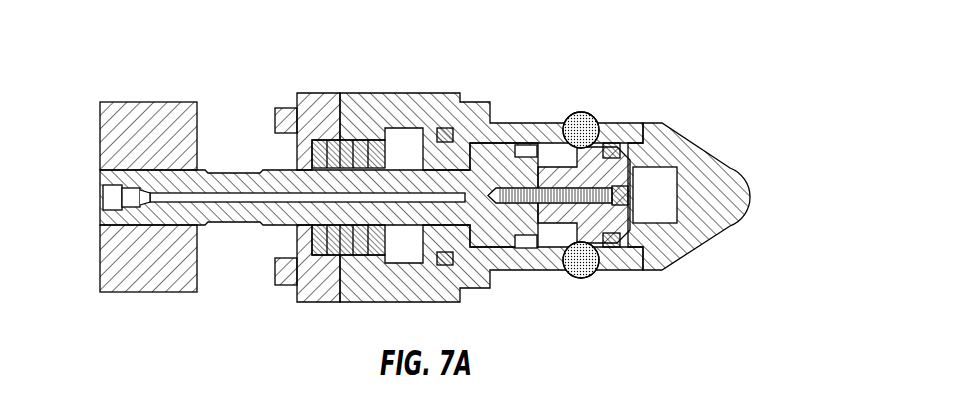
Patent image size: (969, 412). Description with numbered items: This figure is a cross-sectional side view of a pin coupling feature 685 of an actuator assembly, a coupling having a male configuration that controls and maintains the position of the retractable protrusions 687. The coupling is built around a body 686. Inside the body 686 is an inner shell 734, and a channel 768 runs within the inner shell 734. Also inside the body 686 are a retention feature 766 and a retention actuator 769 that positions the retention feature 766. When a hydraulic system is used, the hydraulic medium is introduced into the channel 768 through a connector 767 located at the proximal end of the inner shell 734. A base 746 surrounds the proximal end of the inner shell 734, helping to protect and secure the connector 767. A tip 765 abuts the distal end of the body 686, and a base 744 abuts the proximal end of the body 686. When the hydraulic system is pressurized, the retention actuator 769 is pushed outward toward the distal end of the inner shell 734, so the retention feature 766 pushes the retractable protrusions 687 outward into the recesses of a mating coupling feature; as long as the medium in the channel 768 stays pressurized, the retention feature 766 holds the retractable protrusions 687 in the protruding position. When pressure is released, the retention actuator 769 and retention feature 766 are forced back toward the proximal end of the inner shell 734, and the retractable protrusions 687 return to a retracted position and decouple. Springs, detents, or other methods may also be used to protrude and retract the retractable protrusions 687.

The pin coupling feature 685 is at (731, 55).
The body 686 is at (398, 93).
The retractable protrusions 687 is at (582, 111).
The inner shell 734 is at (242, 223).
The base 744 is at (318, 93).
The base 746 is at (150, 102).
The tip 765 is at (705, 125).
The retention feature 766 is at (622, 123).
The connector 767 is at (102, 180).
The channel 768 is at (243, 187).
The retention actuator 769 is at (515, 205).